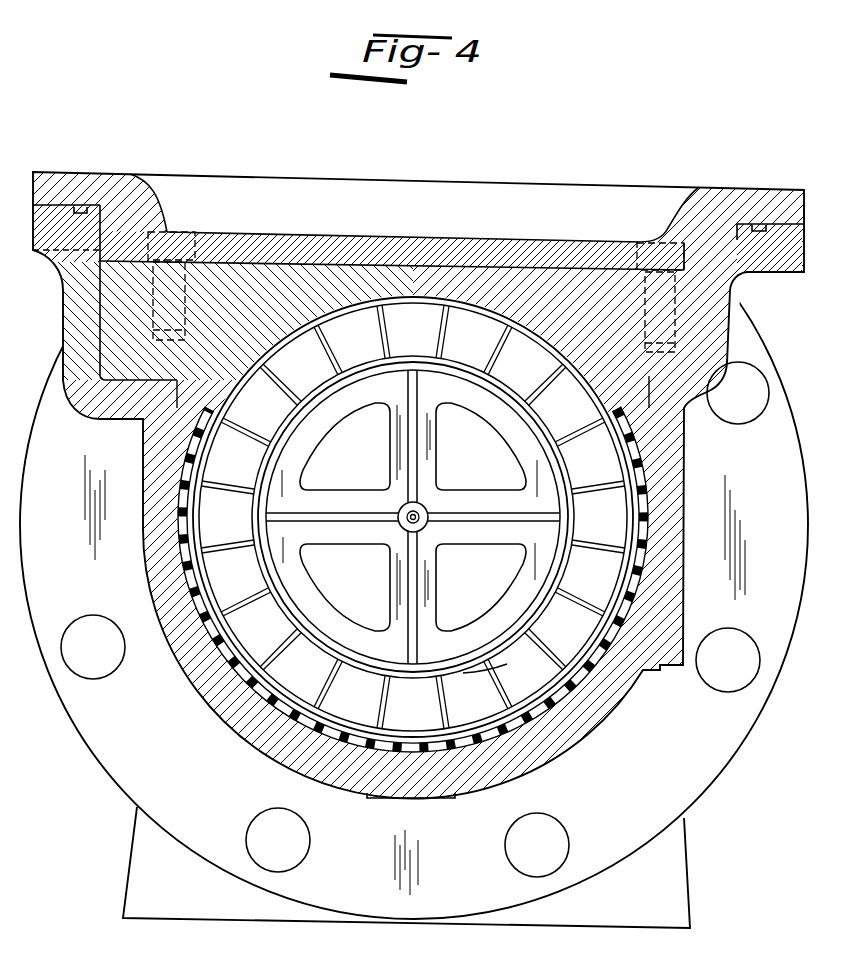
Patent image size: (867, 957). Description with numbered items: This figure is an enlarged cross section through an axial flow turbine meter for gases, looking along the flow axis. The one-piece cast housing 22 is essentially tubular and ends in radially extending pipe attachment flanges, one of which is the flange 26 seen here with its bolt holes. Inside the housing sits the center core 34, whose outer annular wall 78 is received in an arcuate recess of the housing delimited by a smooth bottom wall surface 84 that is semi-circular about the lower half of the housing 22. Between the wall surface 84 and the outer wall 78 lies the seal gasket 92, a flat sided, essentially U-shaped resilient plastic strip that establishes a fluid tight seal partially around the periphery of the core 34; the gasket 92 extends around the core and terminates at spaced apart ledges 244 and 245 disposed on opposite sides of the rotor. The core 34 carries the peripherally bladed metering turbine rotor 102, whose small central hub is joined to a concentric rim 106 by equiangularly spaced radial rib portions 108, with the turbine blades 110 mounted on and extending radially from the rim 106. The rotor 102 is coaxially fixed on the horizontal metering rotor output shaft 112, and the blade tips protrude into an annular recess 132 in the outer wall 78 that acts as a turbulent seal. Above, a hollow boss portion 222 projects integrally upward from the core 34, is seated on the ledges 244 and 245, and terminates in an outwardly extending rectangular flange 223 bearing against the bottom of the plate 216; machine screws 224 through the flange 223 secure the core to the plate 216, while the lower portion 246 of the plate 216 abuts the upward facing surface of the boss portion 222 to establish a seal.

The housing 22 is at (182, 670).
The pipe attachment flange 26 is at (112, 781).
The center core 34 is at (293, 716).
The outer annular wall 78 is at (287, 673).
The bottom wall surface 84 is at (180, 653).
The seal gasket 92 is at (178, 477).
The metering turbine rotor 102 is at (388, 589).
The rim 106 is at (283, 432).
The rib portion 108 is at (368, 450).
The turbine blade 110 is at (508, 665).
The metering rotor output shaft 112 is at (403, 530).
The annular recess 132 is at (333, 723).
The plate 216 is at (585, 241).
The hollow boss portion 222 is at (113, 302).
The rectangular flange 223 is at (153, 260).
The machine screw 224 is at (217, 232).
The ledge 244 is at (126, 374).
The ledge 245 is at (708, 396).
The lower portion of plate 246 is at (476, 242).